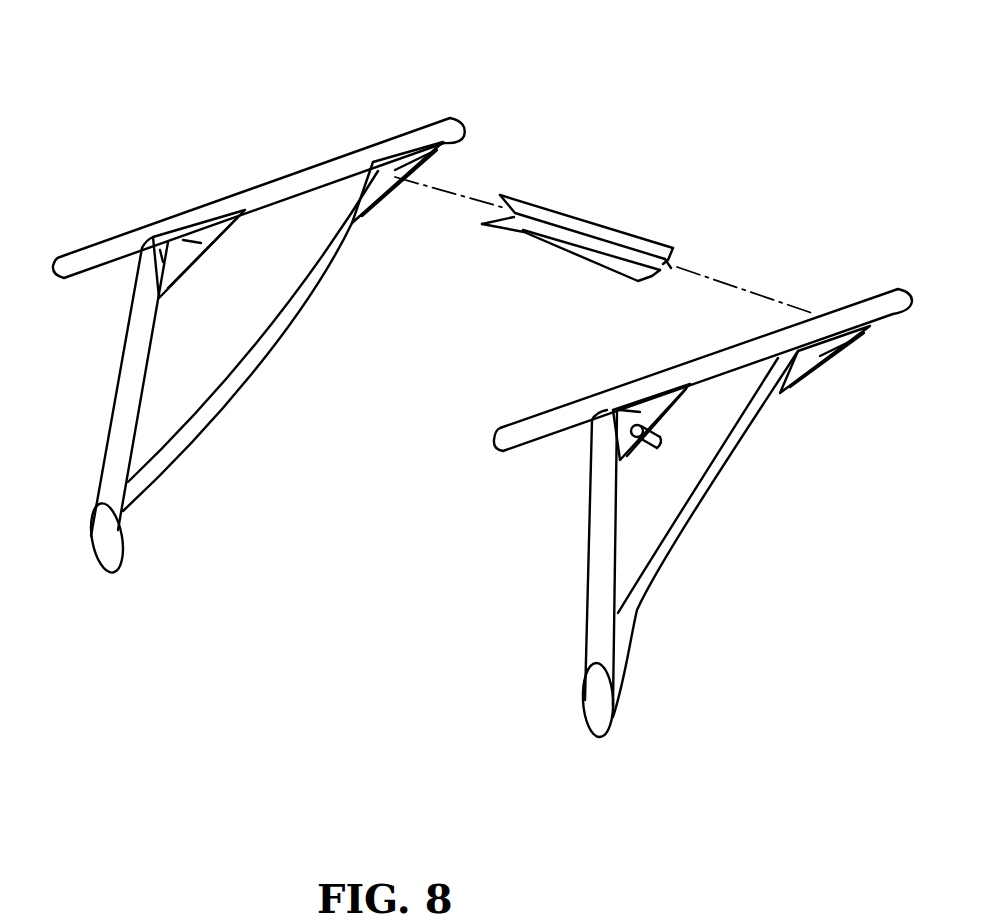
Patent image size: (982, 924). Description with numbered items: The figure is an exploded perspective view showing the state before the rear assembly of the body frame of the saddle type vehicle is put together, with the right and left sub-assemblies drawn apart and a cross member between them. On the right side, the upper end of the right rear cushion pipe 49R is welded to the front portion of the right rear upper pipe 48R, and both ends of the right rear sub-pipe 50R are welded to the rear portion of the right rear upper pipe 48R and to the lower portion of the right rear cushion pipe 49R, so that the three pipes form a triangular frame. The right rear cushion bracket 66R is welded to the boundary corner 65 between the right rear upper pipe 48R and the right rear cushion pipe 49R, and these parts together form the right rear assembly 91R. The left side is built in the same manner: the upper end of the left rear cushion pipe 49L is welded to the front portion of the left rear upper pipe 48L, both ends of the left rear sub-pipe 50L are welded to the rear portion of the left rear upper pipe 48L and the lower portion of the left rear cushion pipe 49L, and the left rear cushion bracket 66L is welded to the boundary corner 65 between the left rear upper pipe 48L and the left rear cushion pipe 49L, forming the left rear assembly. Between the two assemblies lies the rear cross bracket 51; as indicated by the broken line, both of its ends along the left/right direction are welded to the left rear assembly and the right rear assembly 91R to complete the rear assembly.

The right rear upper pipe 48R is at (303, 172).
The left rear upper pipe 48L is at (658, 372).
The right rear cushion pipe 49R is at (118, 388).
The left rear cushion pipe 49L is at (595, 562).
The right rear sub-pipe 50R is at (263, 360).
The left rear sub-pipe 50L is at (703, 497).
The rear cross bracket 51 is at (587, 220).
The boundary corner 65 is at (168, 234).
The right rear cushion bracket 66R is at (210, 207).
The left rear cushion bracket 66L is at (640, 410).
The right rear assembly 91R is at (87, 240).